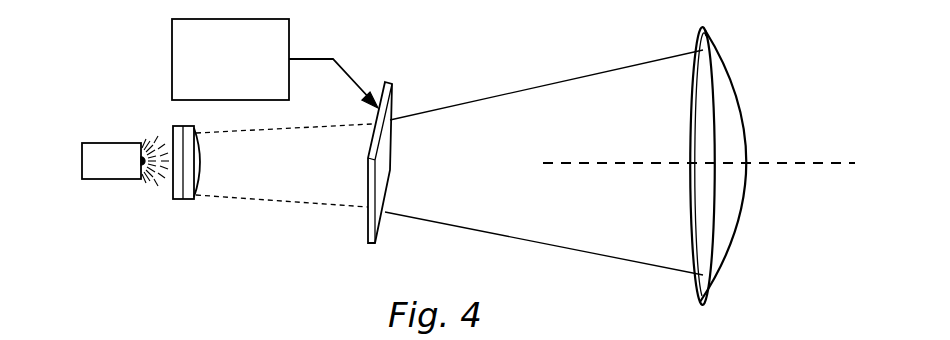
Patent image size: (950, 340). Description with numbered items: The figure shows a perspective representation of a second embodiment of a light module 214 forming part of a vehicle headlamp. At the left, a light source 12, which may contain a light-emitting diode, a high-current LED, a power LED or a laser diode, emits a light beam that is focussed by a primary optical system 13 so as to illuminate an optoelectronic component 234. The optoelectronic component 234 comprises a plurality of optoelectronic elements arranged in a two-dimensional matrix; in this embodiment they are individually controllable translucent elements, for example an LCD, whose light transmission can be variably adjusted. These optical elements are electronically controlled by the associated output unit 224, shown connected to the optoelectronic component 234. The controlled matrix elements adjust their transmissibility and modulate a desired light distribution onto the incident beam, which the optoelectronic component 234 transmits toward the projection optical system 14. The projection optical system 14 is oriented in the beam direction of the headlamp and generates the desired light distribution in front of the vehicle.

The light source 12 is at (113, 170).
The primary optical system 13 is at (180, 183).
The projection optical system 14 is at (750, 184).
The light module 214 is at (431, 170).
The output unit 224 is at (275, 63).
The optoelectronic component 234 is at (368, 186).